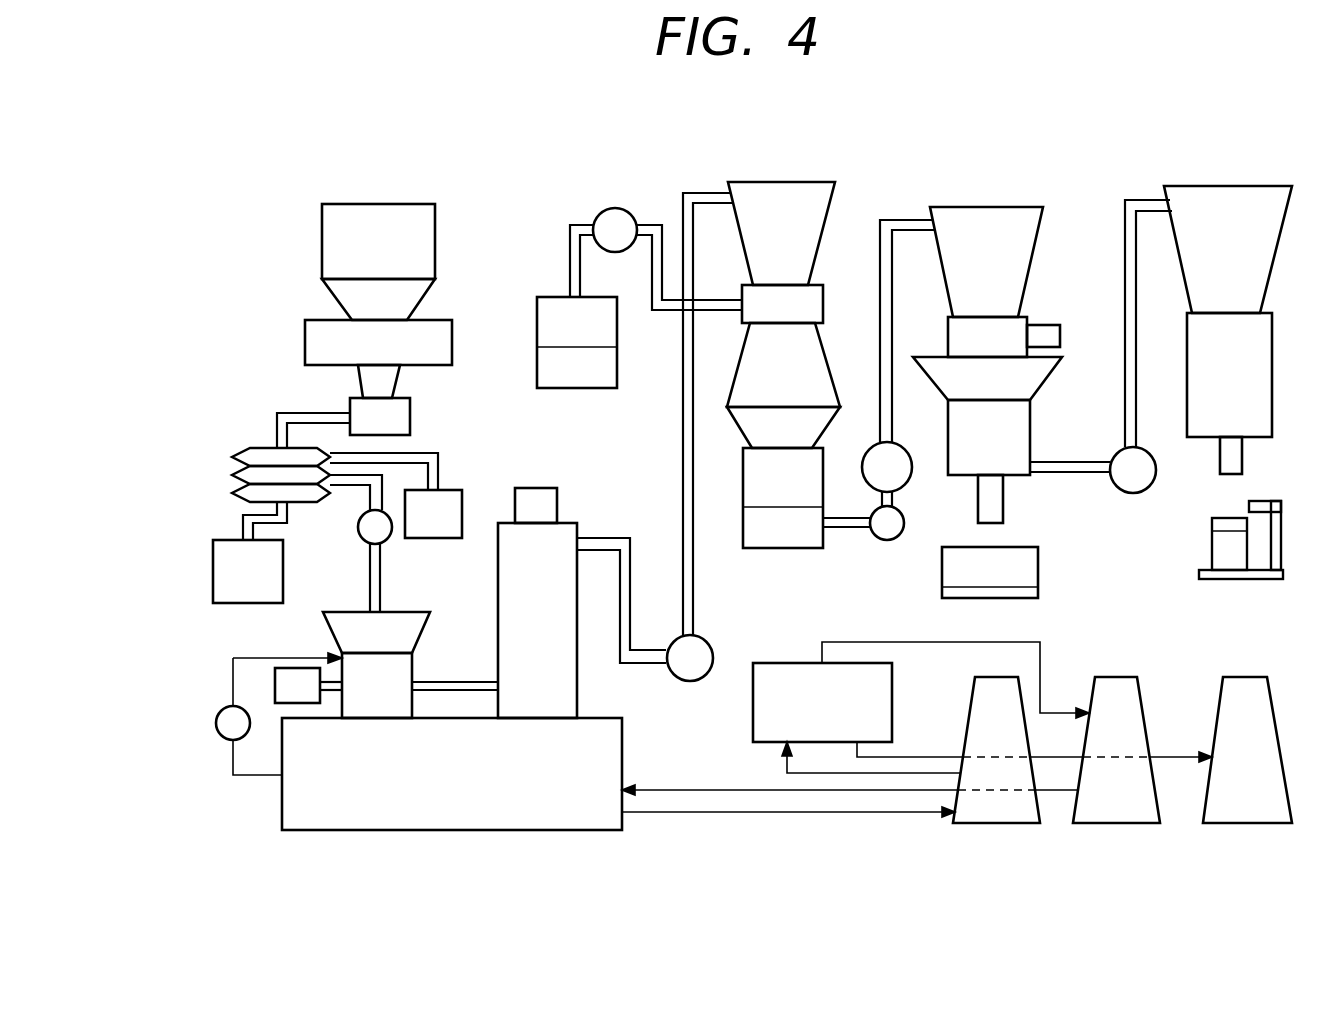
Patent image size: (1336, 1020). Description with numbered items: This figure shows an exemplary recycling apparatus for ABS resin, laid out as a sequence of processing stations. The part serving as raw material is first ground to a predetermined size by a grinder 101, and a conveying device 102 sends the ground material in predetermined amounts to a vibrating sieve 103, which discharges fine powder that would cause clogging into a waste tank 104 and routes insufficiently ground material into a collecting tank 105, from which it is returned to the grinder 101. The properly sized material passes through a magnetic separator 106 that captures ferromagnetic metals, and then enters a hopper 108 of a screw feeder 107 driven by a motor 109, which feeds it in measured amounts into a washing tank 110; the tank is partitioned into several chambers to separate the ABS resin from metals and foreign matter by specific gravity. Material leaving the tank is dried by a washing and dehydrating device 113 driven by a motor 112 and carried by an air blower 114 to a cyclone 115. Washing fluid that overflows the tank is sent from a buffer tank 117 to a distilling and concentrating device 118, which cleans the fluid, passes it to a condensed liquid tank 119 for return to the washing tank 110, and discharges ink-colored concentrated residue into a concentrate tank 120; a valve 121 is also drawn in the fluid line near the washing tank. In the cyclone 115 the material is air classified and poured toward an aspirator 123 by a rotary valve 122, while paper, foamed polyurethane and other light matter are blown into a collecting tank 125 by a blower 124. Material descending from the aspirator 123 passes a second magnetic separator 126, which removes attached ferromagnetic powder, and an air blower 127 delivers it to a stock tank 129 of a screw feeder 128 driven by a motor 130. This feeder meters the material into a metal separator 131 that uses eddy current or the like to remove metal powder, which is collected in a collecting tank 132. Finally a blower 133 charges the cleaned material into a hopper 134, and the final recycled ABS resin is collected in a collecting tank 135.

The grinder 101 is at (410, 204).
The conveying device 102 is at (410, 420).
The vibrating sieve 103 is at (250, 448).
The waste tank 104 is at (213, 575).
The collecting tank 105 is at (455, 490).
The magnetic separator 106 is at (362, 540).
The screw feeder 107 is at (412, 665).
The hopper 108 is at (420, 612).
The motor 109 is at (290, 668).
The washing tank 110 is at (292, 830).
The motor 112 is at (535, 488).
The washing and dehydrating device 113 is at (575, 523).
The air blower 114 is at (690, 682).
The cyclone 115 is at (825, 182).
The buffer tank 117 is at (965, 823).
The distilling and concentrating device 118 is at (760, 663).
The condensed liquid tank 119 is at (1125, 677).
The concentrate tank 120 is at (1250, 677).
The valve 121 is at (215, 722).
The rotary valve 122 is at (823, 300).
The aspirator 123 is at (840, 375).
The blower 124 is at (620, 208).
The collecting tank 125 is at (545, 297).
The magnetic separator 126 is at (880, 540).
The air blower 127 is at (905, 485).
The screw feeder 128 is at (950, 320).
The stock tank 129 is at (1025, 207).
The motor 130 is at (1050, 325).
The metal separator 131 is at (1030, 432).
The collecting tank 132 is at (1030, 547).
The blower 133 is at (1125, 493).
The hopper 134 is at (1262, 186).
The collecting tank 135 is at (1220, 518).